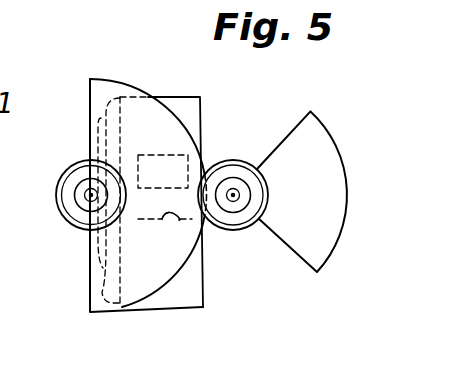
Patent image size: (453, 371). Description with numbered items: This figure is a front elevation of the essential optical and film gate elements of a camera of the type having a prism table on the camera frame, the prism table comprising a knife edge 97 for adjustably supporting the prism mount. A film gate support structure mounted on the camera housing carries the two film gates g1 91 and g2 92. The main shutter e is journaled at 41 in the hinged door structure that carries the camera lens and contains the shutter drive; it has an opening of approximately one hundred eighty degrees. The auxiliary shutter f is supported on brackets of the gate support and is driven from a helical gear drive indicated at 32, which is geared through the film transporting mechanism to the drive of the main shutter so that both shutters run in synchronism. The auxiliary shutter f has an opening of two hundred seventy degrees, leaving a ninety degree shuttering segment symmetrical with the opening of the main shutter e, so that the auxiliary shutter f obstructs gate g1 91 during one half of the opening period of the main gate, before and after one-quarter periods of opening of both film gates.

The main shutter e is at (143, 108).
The auxiliary shutter f is at (333, 224).
The gate 91 is at (192, 110).
The gate 92 is at (100, 269).
The journal of the main shutter 41 is at (88, 210).
The helical gear drive 32 is at (244, 231).
The knife edge 97 is at (173, 223).